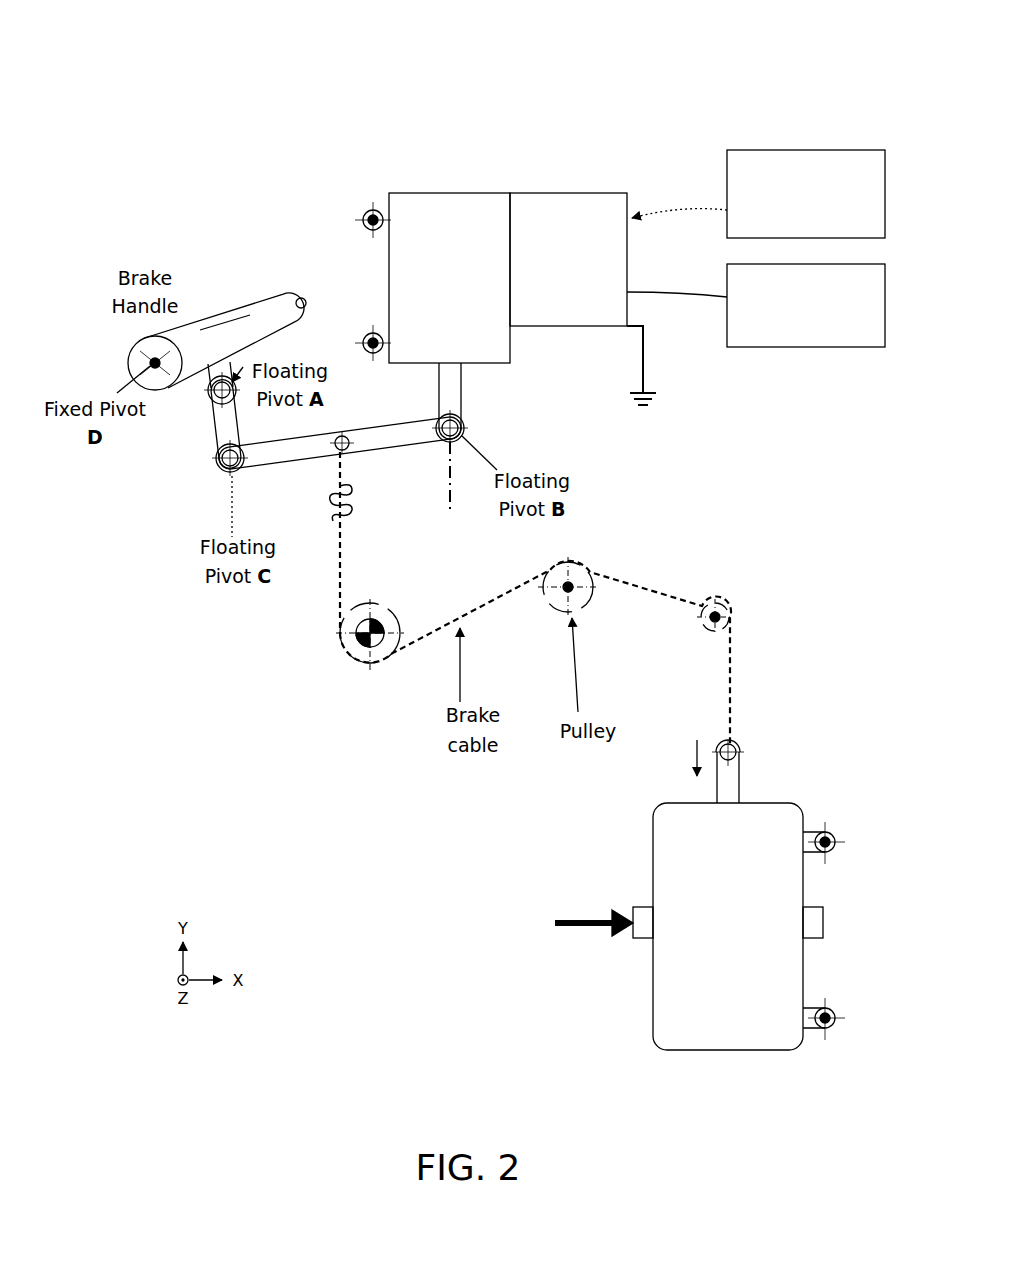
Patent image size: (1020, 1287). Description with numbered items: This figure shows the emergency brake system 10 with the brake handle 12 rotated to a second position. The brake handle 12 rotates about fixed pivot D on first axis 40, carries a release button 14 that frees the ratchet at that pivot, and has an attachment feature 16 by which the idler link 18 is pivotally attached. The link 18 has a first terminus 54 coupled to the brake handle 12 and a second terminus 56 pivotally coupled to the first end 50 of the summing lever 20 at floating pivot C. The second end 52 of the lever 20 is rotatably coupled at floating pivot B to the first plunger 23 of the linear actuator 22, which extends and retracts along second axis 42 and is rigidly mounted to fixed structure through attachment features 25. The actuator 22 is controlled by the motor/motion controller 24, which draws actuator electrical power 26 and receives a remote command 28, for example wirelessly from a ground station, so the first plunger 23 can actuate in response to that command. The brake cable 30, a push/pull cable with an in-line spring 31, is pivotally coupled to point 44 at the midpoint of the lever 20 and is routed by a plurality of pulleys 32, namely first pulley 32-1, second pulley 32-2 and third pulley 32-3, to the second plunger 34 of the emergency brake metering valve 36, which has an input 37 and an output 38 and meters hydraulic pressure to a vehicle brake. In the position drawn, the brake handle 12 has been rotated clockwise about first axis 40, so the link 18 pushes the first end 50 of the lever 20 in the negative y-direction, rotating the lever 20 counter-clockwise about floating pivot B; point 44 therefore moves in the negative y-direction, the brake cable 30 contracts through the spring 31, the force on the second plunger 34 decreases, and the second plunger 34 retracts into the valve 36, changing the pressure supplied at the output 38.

The emergency brake system 10 is at (490, 83).
The brake handle 12 is at (205, 322).
The release button 14 is at (300, 298).
The attachment feature 16 is at (208, 396).
The idler link 18 is at (230, 422).
The summing lever 20 is at (298, 450).
The linear actuator 22 is at (416, 192).
The first plunger 23 is at (460, 382).
The motor/motion controller 24 is at (578, 192).
The attachment features 25 is at (366, 332).
The actuator electrical power 26 is at (775, 348).
The remote command 28 is at (773, 150).
The brake cable 30 is at (345, 552).
The spring 31 is at (355, 508).
The plurality of pulleys 32 is at (517, 600).
The first pulley 32-1 is at (350, 664).
The second pulley 32-2 is at (582, 552).
The third pulley 32-3 is at (730, 597).
The second plunger 34 is at (737, 770).
The emergency brake metering valve 36 is at (792, 964).
The input 37 is at (643, 905).
The output 38 is at (814, 905).
The first axis 40 is at (145, 364).
The second axis 42 is at (450, 503).
The point 44 is at (338, 430).
The first end 50 is at (205, 462).
The second end 52 is at (483, 428).
The first terminus 54 is at (228, 300).
The second terminus 56 is at (212, 478).